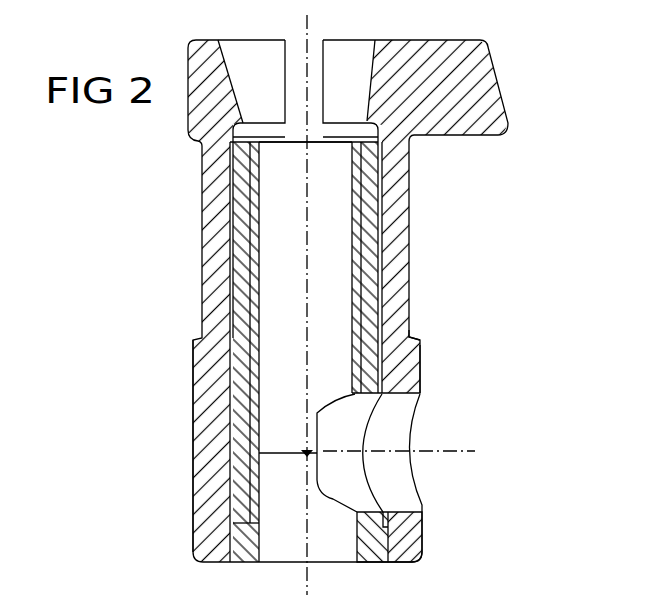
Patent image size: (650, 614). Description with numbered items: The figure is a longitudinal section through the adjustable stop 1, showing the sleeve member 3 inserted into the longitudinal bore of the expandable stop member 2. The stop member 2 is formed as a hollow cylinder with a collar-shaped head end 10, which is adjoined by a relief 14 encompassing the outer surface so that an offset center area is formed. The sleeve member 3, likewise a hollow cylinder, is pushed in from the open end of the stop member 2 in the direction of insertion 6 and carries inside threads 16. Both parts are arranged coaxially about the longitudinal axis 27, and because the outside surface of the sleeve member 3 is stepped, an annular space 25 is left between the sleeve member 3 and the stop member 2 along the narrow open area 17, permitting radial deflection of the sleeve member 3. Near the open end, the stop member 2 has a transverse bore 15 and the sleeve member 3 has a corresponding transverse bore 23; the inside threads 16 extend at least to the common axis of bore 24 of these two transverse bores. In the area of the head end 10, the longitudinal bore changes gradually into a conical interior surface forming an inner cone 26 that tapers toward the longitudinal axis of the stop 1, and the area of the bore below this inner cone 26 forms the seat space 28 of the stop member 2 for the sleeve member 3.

The adjustable stop 1 is at (418, 247).
The stop member 2 is at (412, 360).
The sleeve member 3 is at (413, 333).
The direction of insertion 6 is at (353, 163).
The head end 10 is at (490, 80).
The relief 14 is at (203, 336).
The transverse bore 15 is at (397, 418).
The inside threads 16 is at (252, 205).
The open area 17 is at (382, 297).
The transverse bore 23 is at (357, 484).
The axis of bore 24 is at (466, 450).
The annular space 25 is at (383, 208).
The inner cone 26 is at (368, 100).
The longitudinal axis 27 is at (305, 251).
The seat space 28 is at (230, 381).